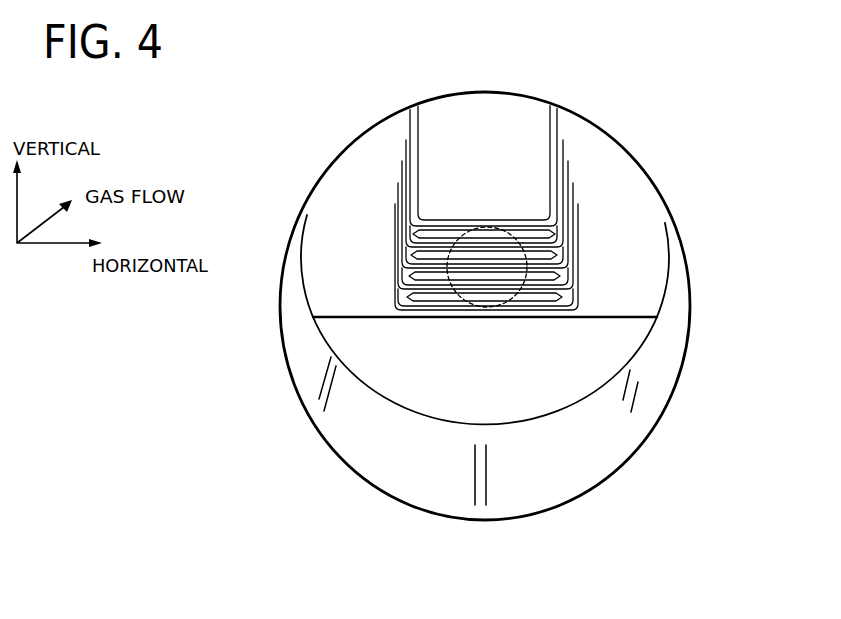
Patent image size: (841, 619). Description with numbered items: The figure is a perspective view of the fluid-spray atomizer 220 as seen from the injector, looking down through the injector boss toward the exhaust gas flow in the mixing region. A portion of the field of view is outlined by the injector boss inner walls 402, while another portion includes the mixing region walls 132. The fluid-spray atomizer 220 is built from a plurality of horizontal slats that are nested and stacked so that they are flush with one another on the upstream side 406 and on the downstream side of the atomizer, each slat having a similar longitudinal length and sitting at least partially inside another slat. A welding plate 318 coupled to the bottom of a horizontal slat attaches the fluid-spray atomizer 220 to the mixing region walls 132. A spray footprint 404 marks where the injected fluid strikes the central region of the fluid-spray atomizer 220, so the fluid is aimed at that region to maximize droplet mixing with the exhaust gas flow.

The mixing region walls 132 is at (570, 470).
The fluid-spray atomizer 220 is at (608, 176).
The welding plate 318 is at (336, 318).
The injector boss inner walls 402 is at (372, 128).
The spray footprint 404 is at (488, 322).
The upstream side 406 is at (609, 436).